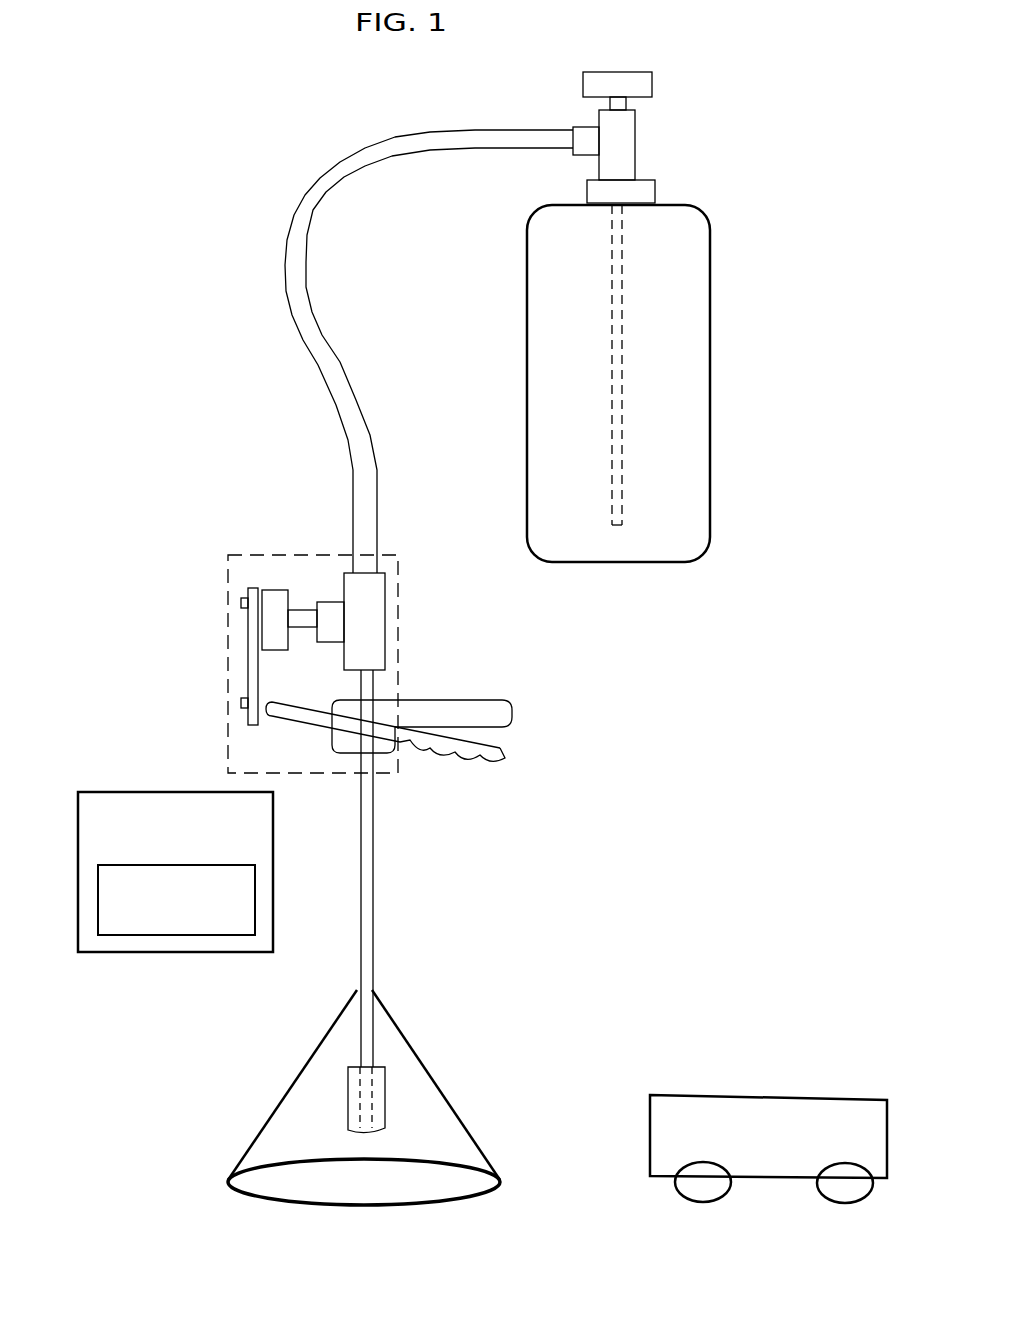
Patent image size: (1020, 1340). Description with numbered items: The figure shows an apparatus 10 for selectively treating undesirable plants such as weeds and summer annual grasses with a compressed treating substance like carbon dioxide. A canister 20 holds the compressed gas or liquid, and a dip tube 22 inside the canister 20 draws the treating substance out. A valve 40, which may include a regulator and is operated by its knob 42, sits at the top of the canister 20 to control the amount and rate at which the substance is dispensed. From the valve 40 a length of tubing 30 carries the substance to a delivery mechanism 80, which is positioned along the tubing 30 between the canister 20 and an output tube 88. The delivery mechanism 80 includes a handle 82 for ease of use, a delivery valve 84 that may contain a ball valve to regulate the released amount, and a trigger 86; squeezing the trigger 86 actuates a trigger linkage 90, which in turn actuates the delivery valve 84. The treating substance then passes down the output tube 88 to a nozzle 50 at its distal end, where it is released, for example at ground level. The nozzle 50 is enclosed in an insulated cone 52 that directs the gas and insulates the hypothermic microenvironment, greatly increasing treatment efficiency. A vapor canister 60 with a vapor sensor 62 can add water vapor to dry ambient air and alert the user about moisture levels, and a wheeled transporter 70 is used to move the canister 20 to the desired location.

The apparatus 10 is at (142, 299).
The canister 20 is at (676, 383).
The dip tube 22 is at (724, 365).
The tubing 30 is at (346, 350).
The valve 40 is at (669, 156).
The valve knob 42 is at (674, 91).
The nozzle 50 is at (489, 1084).
The insulated cone 52 is at (307, 1097).
The vapor canister 60 is at (175, 872).
The vapor sensor 62 is at (176, 900).
The transporter 70 is at (768, 1149).
The delivery mechanism 80 is at (261, 645).
The handle 82 is at (501, 691).
The delivery valve 84 is at (281, 562).
The trigger 86 is at (463, 768).
The output tube 88 is at (518, 868).
The trigger linkage 90 is at (209, 656).